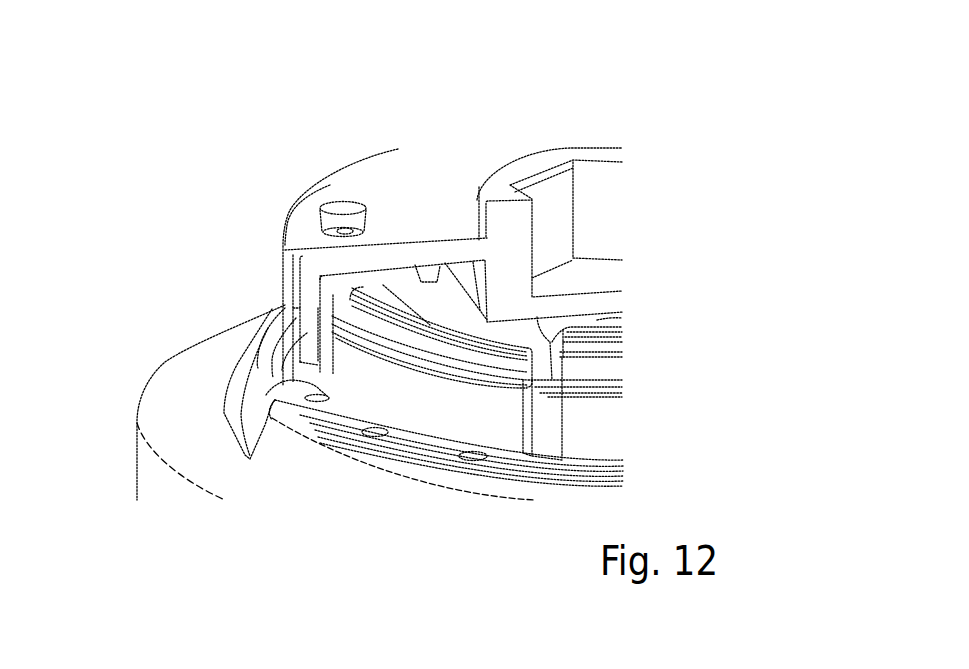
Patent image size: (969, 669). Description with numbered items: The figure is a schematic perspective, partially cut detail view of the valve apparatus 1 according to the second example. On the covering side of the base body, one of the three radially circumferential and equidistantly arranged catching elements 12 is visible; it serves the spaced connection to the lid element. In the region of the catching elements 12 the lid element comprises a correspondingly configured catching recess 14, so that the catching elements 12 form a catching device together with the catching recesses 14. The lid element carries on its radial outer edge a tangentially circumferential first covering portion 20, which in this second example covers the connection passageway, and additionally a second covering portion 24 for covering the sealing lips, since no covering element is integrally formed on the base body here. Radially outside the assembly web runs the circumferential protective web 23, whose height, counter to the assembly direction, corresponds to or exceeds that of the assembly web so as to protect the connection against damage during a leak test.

The valve apparatus 1 is at (786, 63).
The catching element 12 is at (593, 347).
The catching recess 14 is at (332, 219).
The first covering portion 20 is at (345, 262).
The protective web 23 is at (483, 352).
The second covering portion 24 is at (247, 398).